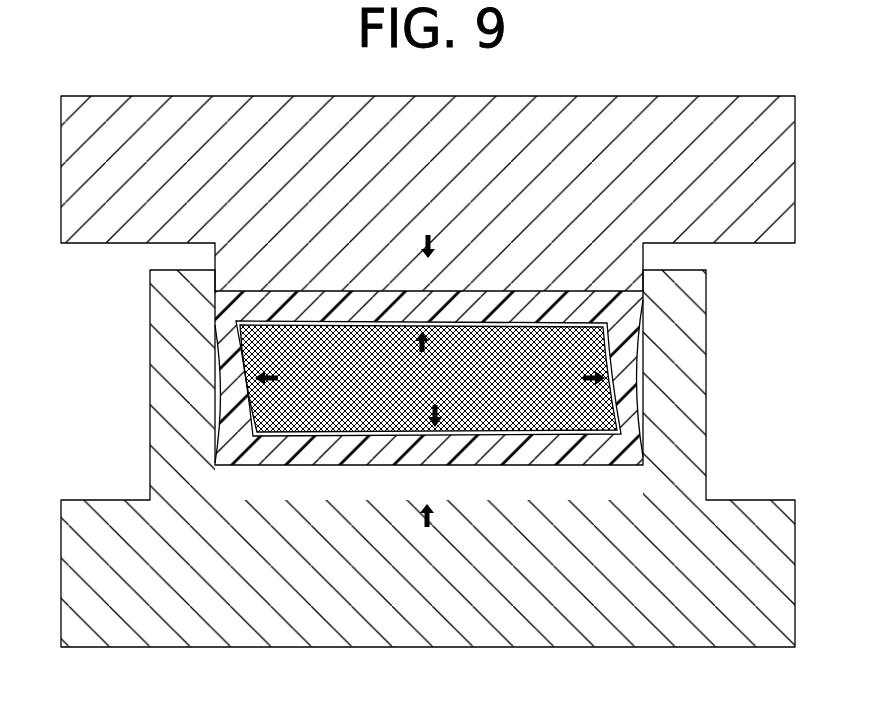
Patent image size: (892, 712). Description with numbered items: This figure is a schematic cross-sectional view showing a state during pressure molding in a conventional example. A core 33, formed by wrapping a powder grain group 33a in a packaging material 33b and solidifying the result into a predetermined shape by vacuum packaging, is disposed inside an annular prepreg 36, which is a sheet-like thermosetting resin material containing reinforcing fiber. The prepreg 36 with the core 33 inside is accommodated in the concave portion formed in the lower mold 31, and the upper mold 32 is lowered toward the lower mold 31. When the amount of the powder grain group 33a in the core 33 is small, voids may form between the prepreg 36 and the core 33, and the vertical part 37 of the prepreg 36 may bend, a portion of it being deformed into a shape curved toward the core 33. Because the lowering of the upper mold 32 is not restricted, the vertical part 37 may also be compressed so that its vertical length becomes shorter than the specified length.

The lower mold 31 is at (233, 578).
The upper mold 32 is at (235, 192).
The core 33 is at (515, 378).
The powder grain group 33a is at (607, 360).
The packaging material 33b is at (607, 332).
The prepreg 36 is at (292, 312).
The vertical part 37 is at (636, 397).